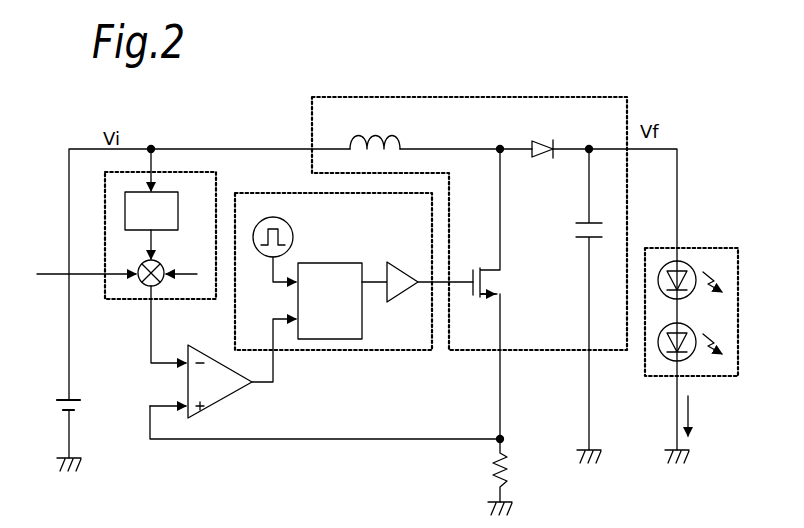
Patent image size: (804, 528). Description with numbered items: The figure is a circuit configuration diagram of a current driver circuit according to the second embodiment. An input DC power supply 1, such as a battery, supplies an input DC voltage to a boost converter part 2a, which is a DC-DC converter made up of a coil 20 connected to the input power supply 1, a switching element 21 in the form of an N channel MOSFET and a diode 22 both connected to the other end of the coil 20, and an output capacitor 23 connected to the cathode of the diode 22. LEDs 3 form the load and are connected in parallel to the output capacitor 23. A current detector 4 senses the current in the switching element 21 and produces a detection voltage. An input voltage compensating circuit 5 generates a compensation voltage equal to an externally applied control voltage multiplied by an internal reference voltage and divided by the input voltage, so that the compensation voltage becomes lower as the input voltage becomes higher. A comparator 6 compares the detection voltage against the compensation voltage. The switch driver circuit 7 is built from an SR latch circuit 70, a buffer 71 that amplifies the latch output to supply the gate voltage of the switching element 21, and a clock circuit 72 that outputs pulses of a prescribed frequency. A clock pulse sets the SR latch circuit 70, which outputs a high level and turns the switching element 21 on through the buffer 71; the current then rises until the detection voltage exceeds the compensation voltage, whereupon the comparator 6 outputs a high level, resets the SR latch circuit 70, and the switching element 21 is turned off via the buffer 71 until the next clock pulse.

The input DC power supply 1 is at (57, 398).
The boost converter part 2a is at (469, 280).
The LEDs 3 is at (710, 248).
The current detector 4 is at (492, 462).
The input voltage compensating circuit 5 is at (193, 172).
The comparator 6 is at (215, 406).
The switch driver circuit 7 is at (354, 301).
The coil 20 is at (400, 136).
The switching element 21 is at (478, 272).
The diode 22 is at (536, 160).
The output capacitor 23 is at (576, 236).
The SR latch circuit 70 is at (362, 330).
The buffer 71 is at (408, 270).
The clock circuit 72 is at (293, 237).